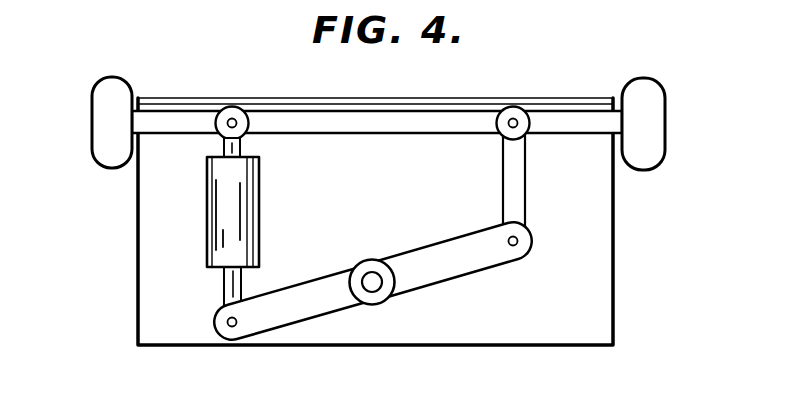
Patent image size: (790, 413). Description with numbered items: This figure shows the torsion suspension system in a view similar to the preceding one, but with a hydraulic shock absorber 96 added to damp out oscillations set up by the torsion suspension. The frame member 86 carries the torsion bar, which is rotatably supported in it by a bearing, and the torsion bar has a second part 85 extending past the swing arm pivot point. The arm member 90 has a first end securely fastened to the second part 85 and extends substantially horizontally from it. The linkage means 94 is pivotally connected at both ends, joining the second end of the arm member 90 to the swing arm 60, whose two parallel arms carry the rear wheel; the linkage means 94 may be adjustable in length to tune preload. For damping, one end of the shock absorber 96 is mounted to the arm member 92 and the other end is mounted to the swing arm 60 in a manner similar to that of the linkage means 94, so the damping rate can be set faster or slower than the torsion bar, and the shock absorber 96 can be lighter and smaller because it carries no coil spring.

The swing arm 60 is at (103, 127).
The second part of the torsion bar 85 is at (370, 272).
The frame member 86 is at (153, 288).
The arm member 90 is at (468, 263).
The arm member 92 is at (302, 293).
The linkage means 94 is at (520, 183).
The hydraulic cylinder 96 is at (213, 214).